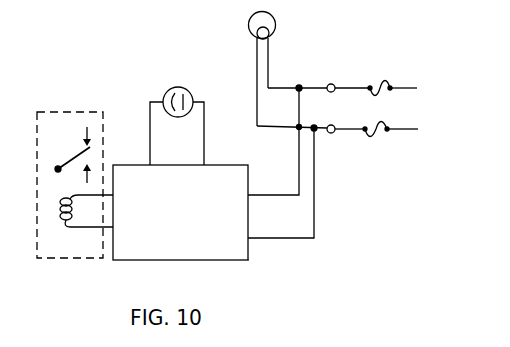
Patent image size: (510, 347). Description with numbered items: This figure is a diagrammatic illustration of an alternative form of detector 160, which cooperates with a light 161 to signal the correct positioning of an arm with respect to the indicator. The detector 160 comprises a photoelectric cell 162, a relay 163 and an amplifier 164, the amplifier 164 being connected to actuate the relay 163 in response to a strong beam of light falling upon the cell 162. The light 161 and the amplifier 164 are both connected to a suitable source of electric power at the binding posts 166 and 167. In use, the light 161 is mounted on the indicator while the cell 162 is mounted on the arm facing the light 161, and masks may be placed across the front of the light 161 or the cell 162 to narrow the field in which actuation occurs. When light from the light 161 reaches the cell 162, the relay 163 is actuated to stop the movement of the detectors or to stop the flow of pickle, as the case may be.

The detector 160 is at (252, 259).
The light 161 is at (276, 24).
The photoelectric cell 162 is at (189, 70).
The relay 163 is at (40, 259).
The amplifier 164 is at (178, 262).
The binding post 166 is at (335, 85).
The binding post 167 is at (335, 134).